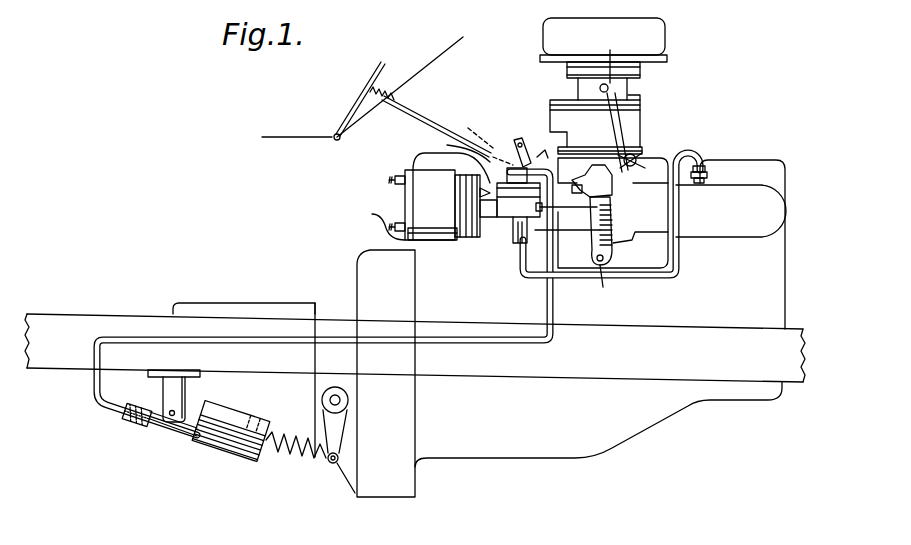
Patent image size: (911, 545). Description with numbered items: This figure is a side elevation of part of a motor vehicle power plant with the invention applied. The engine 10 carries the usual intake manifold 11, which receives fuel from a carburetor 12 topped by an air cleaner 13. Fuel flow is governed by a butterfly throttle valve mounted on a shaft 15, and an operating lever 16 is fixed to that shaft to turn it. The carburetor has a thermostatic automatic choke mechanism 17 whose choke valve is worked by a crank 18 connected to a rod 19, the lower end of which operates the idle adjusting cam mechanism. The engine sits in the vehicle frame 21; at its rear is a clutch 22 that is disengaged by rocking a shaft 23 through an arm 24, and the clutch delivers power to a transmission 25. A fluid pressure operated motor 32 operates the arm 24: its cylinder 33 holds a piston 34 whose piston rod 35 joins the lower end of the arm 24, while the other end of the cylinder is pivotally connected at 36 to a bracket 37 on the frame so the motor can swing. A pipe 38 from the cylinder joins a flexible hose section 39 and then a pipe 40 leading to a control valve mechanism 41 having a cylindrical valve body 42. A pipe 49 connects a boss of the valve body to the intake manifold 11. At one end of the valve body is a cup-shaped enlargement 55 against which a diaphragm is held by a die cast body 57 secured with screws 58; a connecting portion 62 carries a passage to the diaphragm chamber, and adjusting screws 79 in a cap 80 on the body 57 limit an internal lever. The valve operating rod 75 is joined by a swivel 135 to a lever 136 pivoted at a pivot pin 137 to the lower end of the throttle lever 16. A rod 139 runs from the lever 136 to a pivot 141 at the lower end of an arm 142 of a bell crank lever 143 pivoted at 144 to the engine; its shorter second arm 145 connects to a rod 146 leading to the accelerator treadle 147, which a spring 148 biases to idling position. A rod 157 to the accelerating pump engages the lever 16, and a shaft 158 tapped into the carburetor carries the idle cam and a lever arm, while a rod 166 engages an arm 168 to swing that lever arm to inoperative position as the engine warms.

The motor vehicle engine 10 is at (743, 160).
The intake manifold 11 is at (735, 230).
The carburetor 12 is at (552, 97).
The air cleaner 13 is at (665, 37).
The shaft 15 is at (617, 193).
The operating lever 16 is at (610, 258).
The automatic choke mechanism 17 is at (604, 125).
The crank 18 is at (610, 50).
The rod 19 is at (610, 135).
The vehicle frame 21 is at (735, 335).
The clutch 22 is at (352, 268).
The shaft 23 is at (340, 400).
The arm 24 is at (342, 435).
The transmission 25 is at (222, 302).
The fluid pressure operated motor 32 is at (210, 450).
The cylinder 33 is at (233, 448).
The piston 34 is at (258, 413).
The piston rod 35 is at (320, 463).
The pivotal connection 36 is at (172, 417).
The bracket 37 is at (167, 393).
The pipe 38 is at (157, 427).
The flexible hose section 39 is at (137, 425).
The pipe 40 is at (545, 290).
The control valve mechanism 41 is at (497, 222).
The cylindrical valve body 42 is at (507, 227).
The pipe 49 is at (572, 277).
The annular cup shaped enlargement 55 is at (477, 190).
The die cast body 57 is at (430, 242).
The screws 58 is at (477, 240).
The connecting portion 62 is at (451, 159).
The valve operating rod 75 is at (580, 207).
The adjusting screws 79 is at (396, 175).
The cap 80 is at (375, 223).
The swivel 135 is at (615, 213).
The lever 136 is at (597, 255).
The pivot pin 137 is at (602, 273).
The rod 139 is at (548, 232).
The pivot 141 is at (527, 243).
The arm 142 is at (537, 157).
The bell crank lever 143 is at (513, 143).
The pivot 144 is at (518, 140).
The second arm 145 is at (483, 140).
The rod 146 is at (437, 117).
The accelerator treadle 147 is at (380, 62).
The spring 148 is at (382, 90).
The rod 157 is at (640, 120).
The shaft 158 is at (637, 173).
The rod 166 is at (650, 153).
The arm 168 is at (652, 133).